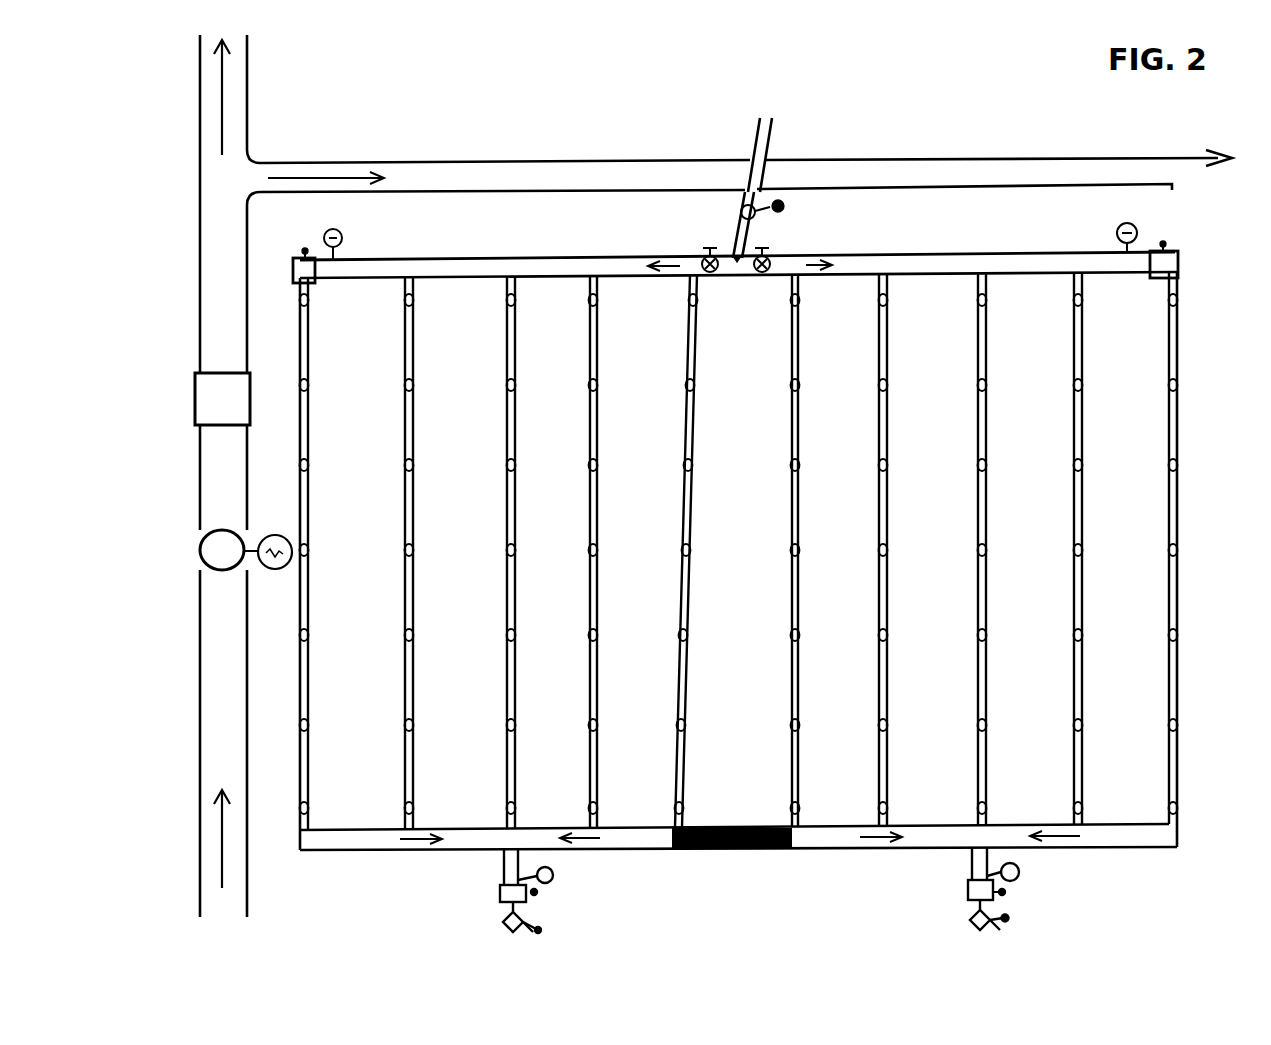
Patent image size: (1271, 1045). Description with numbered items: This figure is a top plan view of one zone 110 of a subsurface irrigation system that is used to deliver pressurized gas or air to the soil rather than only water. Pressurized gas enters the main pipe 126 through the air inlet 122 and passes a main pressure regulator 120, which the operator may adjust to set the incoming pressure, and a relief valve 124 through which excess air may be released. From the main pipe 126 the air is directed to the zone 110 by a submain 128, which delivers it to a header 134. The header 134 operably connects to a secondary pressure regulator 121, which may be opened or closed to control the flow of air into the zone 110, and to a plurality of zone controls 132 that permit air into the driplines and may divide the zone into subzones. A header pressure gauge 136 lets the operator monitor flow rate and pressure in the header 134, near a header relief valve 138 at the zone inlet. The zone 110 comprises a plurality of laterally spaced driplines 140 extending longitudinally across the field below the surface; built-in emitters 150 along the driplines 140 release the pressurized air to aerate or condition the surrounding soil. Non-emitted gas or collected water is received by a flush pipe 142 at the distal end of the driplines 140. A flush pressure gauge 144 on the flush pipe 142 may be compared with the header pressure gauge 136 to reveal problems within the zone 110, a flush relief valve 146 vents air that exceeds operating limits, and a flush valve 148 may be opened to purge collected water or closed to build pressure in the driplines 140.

The zone 110 is at (657, 245).
The main pressure regulator 120 is at (198, 552).
The secondary pressure regulator 121 is at (747, 206).
The air inlet 122 is at (225, 915).
The relief valve 124 is at (192, 383).
The main pipe 126 is at (195, 258).
The submain 128 is at (438, 160).
The zone control 132 is at (776, 248).
The header 134 is at (940, 262).
The header pressure gauge 136 is at (1137, 226).
The header relief valve 138 is at (1180, 257).
The dripline 140 is at (1080, 513).
The flush pipe 142 is at (1175, 826).
The flush pressure gauge 144 is at (1020, 874).
The flush relief valve 146 is at (1008, 892).
The flush valve 148 is at (1010, 920).
The emitter 150 is at (1083, 635).